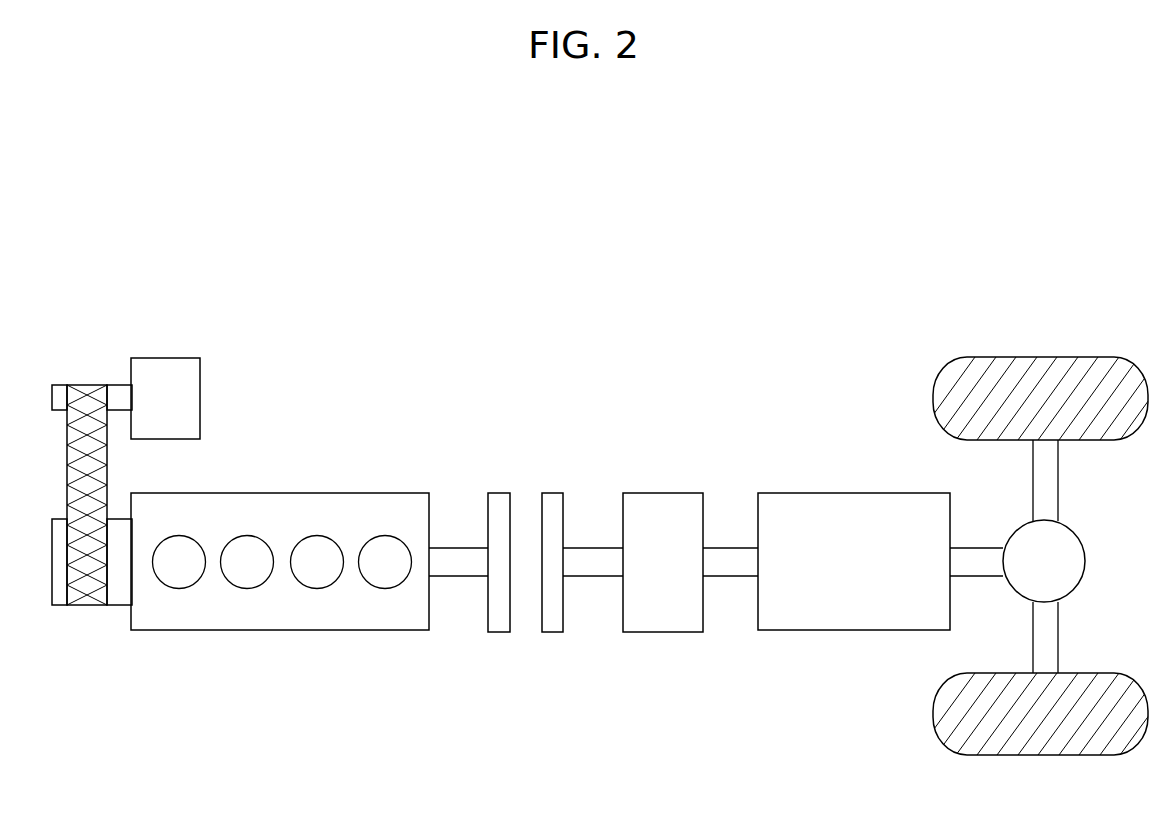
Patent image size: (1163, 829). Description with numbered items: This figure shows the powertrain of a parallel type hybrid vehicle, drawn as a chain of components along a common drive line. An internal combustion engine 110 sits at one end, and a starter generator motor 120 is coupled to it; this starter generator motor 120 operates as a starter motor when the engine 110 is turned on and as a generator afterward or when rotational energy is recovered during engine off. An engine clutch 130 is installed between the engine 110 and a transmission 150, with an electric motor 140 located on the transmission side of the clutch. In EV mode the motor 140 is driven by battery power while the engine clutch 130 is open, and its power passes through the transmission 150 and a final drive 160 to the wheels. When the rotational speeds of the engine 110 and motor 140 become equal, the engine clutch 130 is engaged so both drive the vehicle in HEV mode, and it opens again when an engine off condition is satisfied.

The internal combustion engine 110 is at (378, 493).
The starter generator motor 120 is at (150, 358).
The engine clutch 130 is at (553, 493).
The electric motor 140 is at (653, 493).
The transmission 150 is at (900, 493).
The final drive 160 is at (1078, 533).